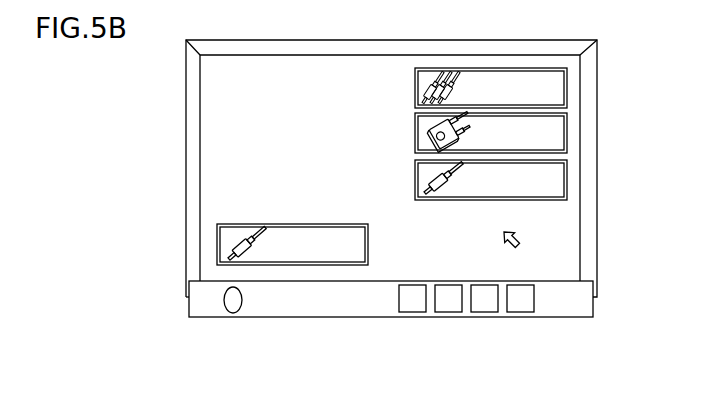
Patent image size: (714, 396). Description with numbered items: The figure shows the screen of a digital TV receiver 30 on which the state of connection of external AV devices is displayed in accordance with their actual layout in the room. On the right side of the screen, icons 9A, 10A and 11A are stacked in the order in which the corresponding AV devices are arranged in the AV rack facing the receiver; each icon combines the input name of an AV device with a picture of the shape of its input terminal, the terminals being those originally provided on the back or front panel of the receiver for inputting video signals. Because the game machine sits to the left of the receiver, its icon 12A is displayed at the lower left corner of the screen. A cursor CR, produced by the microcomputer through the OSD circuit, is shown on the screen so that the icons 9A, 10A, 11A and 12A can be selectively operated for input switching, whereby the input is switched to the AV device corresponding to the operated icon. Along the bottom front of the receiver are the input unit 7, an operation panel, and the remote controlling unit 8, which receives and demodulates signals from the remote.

The digital TV receiver 30 is at (538, 38).
The remote controlling unit 8 is at (233, 313).
The input unit 7 is at (392, 319).
The icon 9A is at (567, 88).
The icon 10A is at (567, 133).
The icon 11A is at (567, 178).
The icon 12A is at (217, 246).
The cursor CR is at (521, 244).